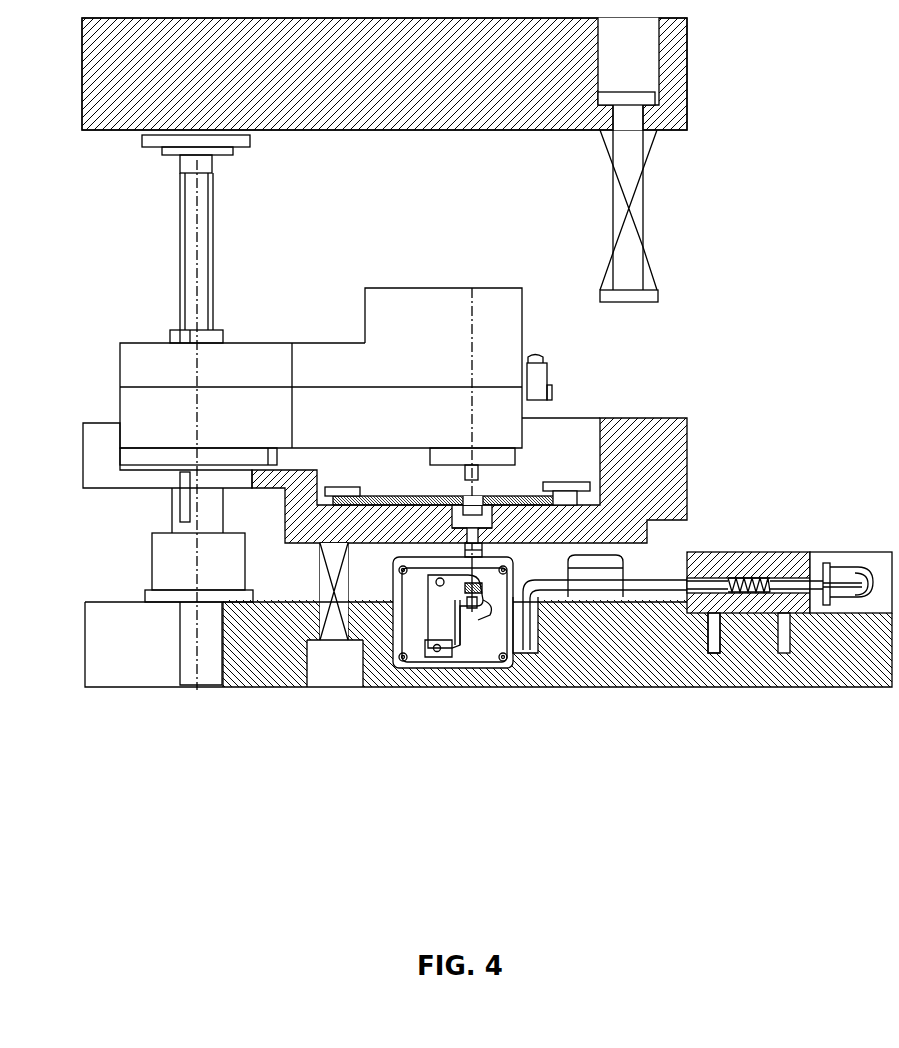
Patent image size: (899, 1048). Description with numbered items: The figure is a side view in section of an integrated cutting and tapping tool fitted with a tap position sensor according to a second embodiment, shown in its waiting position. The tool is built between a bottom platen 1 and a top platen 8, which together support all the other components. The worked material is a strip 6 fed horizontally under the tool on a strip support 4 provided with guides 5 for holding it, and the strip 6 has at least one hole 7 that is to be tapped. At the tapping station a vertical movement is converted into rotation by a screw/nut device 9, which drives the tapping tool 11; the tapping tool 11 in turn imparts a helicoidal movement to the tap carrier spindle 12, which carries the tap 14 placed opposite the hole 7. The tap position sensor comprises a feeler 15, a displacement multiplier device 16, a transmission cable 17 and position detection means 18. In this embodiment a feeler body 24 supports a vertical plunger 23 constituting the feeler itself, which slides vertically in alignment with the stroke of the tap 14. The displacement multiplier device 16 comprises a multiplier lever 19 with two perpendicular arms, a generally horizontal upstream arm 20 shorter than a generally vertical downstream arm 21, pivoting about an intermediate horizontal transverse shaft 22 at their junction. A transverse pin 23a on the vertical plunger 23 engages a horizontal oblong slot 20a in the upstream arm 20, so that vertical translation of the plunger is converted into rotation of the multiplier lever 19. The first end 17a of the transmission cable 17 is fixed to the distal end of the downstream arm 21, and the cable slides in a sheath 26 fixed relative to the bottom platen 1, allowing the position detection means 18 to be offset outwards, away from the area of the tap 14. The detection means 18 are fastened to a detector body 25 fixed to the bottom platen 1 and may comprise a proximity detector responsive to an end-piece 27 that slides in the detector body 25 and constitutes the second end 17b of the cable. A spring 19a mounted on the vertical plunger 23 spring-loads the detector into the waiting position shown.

The bottom platen 1 is at (273, 653).
The strip support 4 is at (687, 422).
The guides 5 is at (338, 490).
The strip 6 is at (342, 497).
The hole 7 is at (397, 497).
The top platen 8 is at (687, 66).
The screw/nut device 9 is at (185, 298).
The tapping tool 11 is at (308, 362).
The tap carrier spindle 12 is at (452, 478).
The tap 14 is at (478, 472).
The feeler 15 is at (380, 592).
The displacement multiplier device 16 is at (363, 640).
The transmission cable 17 is at (750, 613).
The first end of the transmission cable 17a is at (477, 690).
The second end of the transmission cable 17b is at (827, 615).
The position detection means 18 is at (840, 573).
The multiplier lever 19 is at (437, 607).
The spring 19a is at (455, 647).
The upstream arm 20 is at (563, 687).
The horizontal oblong slot 20a is at (487, 557).
The downstream arm 21 is at (417, 663).
The intermediate horizontal transverse shaft 22 is at (445, 547).
The vertical plunger 23 is at (580, 500).
The transverse pin 23a is at (488, 683).
The feeler body 24 is at (413, 605).
The detector body 25 is at (708, 605).
The sheath 26 is at (640, 587).
The end-piece 27 is at (813, 592).